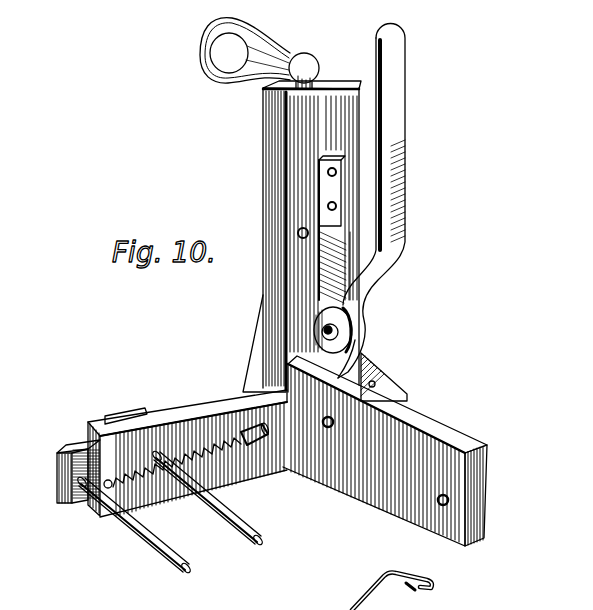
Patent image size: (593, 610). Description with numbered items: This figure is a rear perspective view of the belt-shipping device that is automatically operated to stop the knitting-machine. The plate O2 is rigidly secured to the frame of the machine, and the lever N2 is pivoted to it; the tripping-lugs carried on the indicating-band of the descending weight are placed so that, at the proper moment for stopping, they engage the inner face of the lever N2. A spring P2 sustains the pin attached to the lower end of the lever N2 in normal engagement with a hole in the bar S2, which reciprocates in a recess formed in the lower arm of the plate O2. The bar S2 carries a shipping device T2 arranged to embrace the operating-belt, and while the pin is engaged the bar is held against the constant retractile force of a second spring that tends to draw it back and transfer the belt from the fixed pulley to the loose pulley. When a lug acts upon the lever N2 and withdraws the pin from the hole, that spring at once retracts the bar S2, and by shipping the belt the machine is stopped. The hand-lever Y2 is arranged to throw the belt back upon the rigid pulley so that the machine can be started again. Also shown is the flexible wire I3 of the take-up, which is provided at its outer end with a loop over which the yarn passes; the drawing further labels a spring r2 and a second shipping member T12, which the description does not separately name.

The lever N2 is at (407, 104).
The plate O2 is at (325, 241).
The spring P2 is at (320, 186).
The hand-lever Y2 is at (253, 360).
The bar S2 is at (57, 466).
The spring r2 is at (222, 458).
The shipping device T2 is at (210, 498).
The rod T12 is at (134, 525).
The flexible wire I3 is at (382, 591).